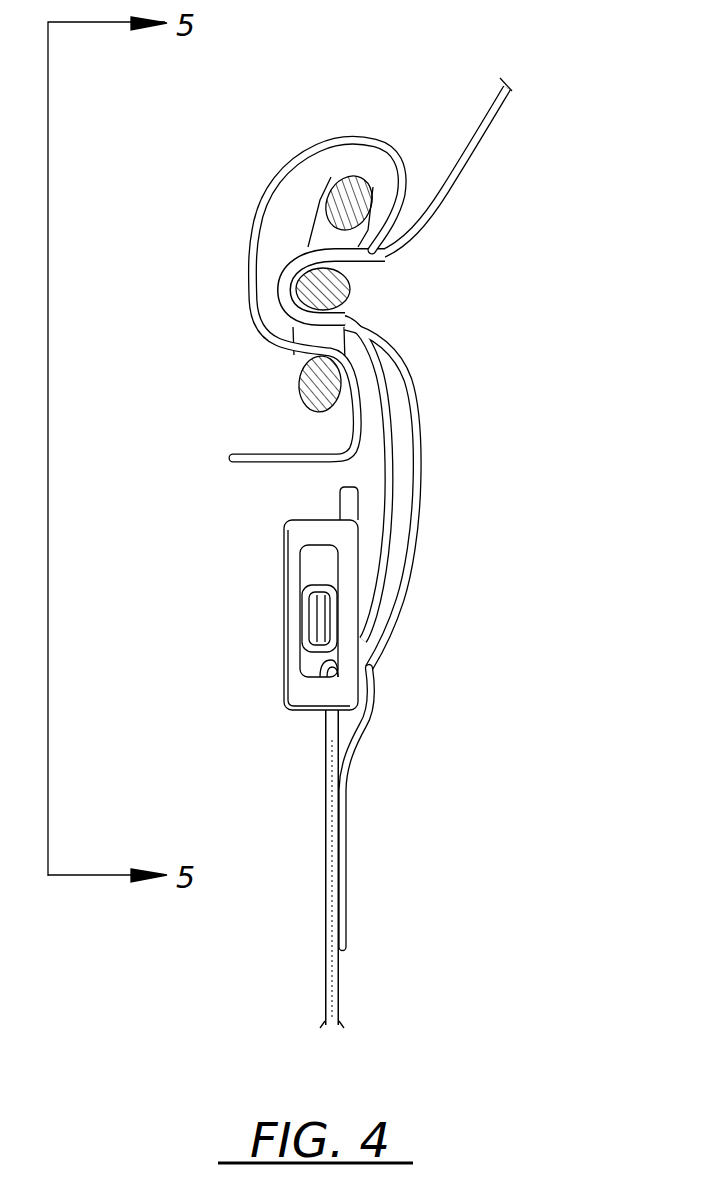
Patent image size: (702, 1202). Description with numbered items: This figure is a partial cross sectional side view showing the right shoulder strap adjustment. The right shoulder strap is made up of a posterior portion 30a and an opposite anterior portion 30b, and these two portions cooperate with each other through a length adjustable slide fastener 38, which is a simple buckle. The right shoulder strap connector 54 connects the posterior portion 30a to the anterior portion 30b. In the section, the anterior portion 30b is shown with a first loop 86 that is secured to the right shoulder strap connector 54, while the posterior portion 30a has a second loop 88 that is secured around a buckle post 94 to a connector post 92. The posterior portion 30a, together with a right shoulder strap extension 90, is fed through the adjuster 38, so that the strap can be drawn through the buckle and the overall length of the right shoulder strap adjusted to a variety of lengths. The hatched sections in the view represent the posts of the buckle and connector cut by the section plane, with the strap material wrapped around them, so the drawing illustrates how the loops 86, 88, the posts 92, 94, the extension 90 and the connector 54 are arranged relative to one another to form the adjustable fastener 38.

The posterior portion 30a is at (483, 123).
The anterior portion 30b is at (322, 977).
The length adjustable slide fastener 38 is at (292, 307).
The right shoulder strap connector 54 is at (287, 670).
The first loop 86 is at (368, 730).
The second loop 88 is at (333, 648).
The right shoulder strap extension 90 is at (235, 463).
The connector post 92 is at (317, 613).
The buckle post 94 is at (358, 298).